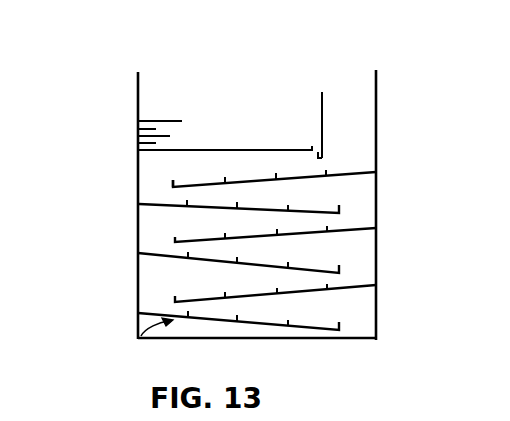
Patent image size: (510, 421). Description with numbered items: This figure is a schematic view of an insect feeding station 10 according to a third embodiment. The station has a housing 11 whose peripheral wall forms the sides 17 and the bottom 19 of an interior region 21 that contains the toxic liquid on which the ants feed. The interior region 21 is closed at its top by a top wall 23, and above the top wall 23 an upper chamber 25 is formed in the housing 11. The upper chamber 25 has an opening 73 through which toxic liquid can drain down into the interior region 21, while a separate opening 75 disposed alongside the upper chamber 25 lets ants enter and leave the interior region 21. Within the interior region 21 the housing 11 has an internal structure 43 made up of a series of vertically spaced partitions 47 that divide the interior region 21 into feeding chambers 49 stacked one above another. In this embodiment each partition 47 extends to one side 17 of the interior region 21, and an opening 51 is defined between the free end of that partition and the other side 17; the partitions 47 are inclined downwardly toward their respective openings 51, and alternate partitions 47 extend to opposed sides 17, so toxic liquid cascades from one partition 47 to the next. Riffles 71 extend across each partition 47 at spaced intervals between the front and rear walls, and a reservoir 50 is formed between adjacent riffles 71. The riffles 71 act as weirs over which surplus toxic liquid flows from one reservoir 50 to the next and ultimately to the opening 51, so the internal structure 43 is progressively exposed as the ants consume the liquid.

The insect feeding station 10 is at (128, 108).
The housing 11 is at (378, 87).
The upper chamber 25 is at (203, 95).
The opening 75 is at (355, 118).
The opening 73 is at (318, 140).
The top wall 23 is at (178, 150).
The reservoir 50 is at (206, 187).
The riffles 71 is at (184, 186).
The partitions 47 is at (182, 200).
The sides 17 is at (377, 212).
The opening 51 is at (153, 234).
The feeding chambers 49 is at (148, 290).
The interior region 21 is at (322, 313).
The internal structure 43 is at (139, 337).
The bottom 19 is at (332, 339).